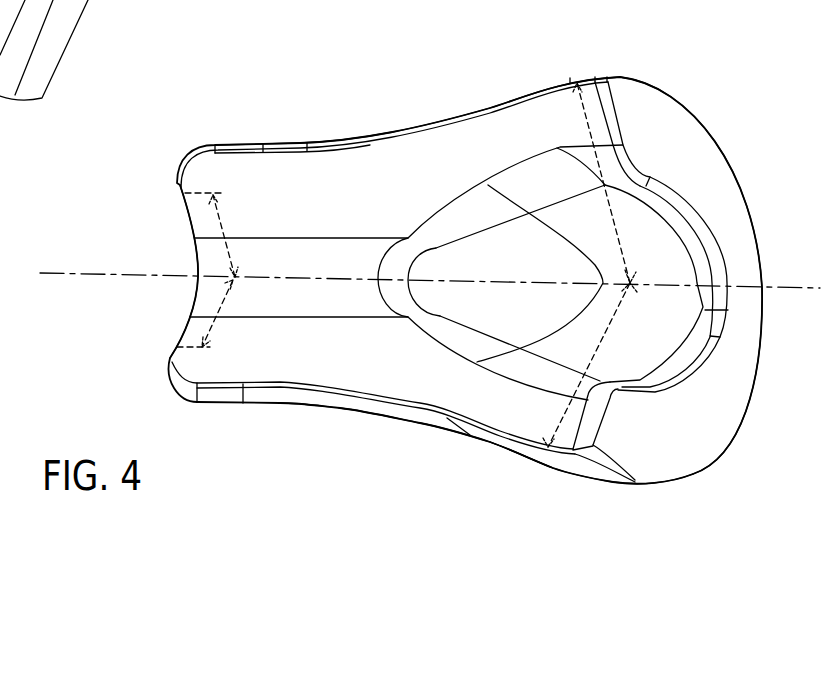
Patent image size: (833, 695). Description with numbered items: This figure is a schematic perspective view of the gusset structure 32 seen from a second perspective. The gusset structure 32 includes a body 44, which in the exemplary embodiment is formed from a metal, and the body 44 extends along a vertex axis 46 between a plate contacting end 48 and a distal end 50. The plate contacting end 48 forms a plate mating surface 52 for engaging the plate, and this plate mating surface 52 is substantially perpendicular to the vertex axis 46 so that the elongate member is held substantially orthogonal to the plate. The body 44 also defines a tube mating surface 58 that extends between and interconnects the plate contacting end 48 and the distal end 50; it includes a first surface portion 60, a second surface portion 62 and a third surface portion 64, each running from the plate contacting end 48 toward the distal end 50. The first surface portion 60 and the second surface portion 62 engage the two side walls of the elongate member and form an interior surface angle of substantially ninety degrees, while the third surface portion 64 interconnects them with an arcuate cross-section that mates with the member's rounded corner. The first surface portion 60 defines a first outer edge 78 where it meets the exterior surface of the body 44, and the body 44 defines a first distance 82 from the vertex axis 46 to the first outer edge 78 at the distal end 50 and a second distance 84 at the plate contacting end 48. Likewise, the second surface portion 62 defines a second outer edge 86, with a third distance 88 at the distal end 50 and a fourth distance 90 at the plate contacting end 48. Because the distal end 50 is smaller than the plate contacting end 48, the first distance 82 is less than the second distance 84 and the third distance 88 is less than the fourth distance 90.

The gusset structure 32 is at (355, 66).
The body 44 is at (352, 403).
The vertex axis 46 is at (63, 273).
The plate contacting end 48 is at (83, 13).
The distal end 50 is at (188, 322).
The plate mating surface 52 is at (680, 441).
The tube mating surface 58 is at (358, 165).
The first surface portion 60 is at (268, 170).
The second surface portion 62 is at (297, 360).
The third surface portion 64 is at (288, 291).
The first outer edge 78 is at (238, 145).
The first distance 82 is at (228, 226).
The second distance 84 is at (590, 127).
The second outer edge 86 is at (390, 412).
The third distance 88 is at (205, 335).
The fourth distance 90 is at (553, 428).